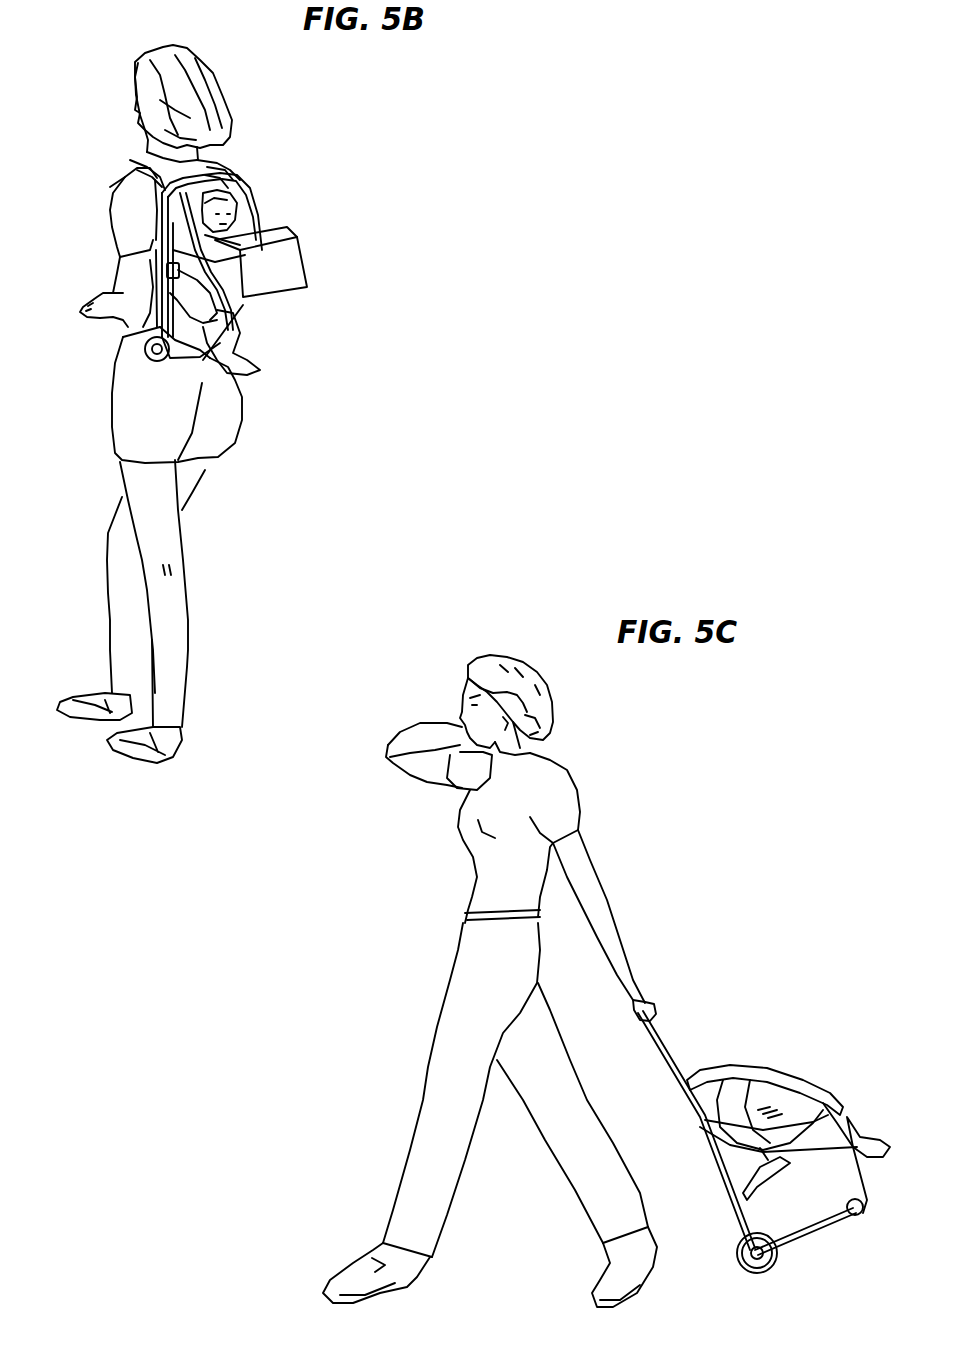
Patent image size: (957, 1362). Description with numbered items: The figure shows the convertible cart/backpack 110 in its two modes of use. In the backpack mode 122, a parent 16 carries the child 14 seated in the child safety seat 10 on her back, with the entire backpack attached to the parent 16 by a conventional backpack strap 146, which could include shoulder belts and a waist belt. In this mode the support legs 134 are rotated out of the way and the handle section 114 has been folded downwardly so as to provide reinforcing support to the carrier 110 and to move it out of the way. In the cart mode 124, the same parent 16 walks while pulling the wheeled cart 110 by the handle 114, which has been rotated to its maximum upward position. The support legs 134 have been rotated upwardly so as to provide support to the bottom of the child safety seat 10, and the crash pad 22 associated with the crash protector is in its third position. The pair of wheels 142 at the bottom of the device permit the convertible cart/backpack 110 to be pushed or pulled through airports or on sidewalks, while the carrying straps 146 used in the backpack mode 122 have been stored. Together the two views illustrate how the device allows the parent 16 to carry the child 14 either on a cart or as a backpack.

In FIG. 5B, the child safety seat 10 is at (196, 259).
In FIG. 5C, the child safety seat 10 is at (765, 1146).
In FIG. 5B, the child 14 is at (227, 200).
In FIG. 5C, the child 14 is at (750, 1063).
In FIG. 5B, the parent 16 is at (130, 215).
In FIG. 5C, the parent 16 is at (550, 777).
In FIG. 5B, the crash pad 22 is at (295, 272).
In FIG. 5C, the crash pad 22 is at (767, 1163).
In FIG. 5B, the convertible cart/backpack 110 is at (160, 262).
In FIG. 5C, the handle section 114 is at (672, 1050).
In FIG. 5B, the backpack mode 122 is at (385, 301).
In FIG. 5C, the cart mode 124 is at (673, 861).
In FIG. 5C, the support legs 134 is at (857, 1182).
In FIG. 5B, the wheels 142 is at (150, 360).
In FIG. 5C, the wheels 142 is at (762, 1272).
In FIG. 5B, the backpack strap 146 is at (145, 175).